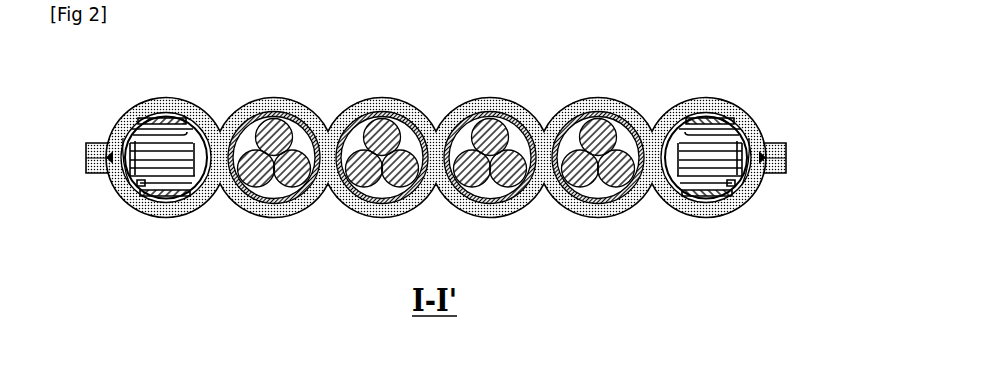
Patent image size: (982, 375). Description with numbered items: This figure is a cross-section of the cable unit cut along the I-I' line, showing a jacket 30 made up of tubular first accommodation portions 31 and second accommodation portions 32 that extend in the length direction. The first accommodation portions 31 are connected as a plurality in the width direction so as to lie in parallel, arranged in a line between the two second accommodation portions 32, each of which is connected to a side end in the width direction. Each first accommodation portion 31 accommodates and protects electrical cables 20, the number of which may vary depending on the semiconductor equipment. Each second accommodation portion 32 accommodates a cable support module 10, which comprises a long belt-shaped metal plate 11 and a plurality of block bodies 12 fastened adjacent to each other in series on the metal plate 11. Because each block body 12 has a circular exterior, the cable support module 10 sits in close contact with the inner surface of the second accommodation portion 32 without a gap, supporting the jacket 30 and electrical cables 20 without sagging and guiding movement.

The cable support module 10 is at (438, 190).
The metal plate 11 is at (152, 186).
The block body 12 is at (172, 190).
The electrical cable 20 is at (352, 194).
The jacket 30 is at (438, 150).
The first accommodation portion 31 is at (352, 126).
The second accommodation portion 32 is at (195, 103).